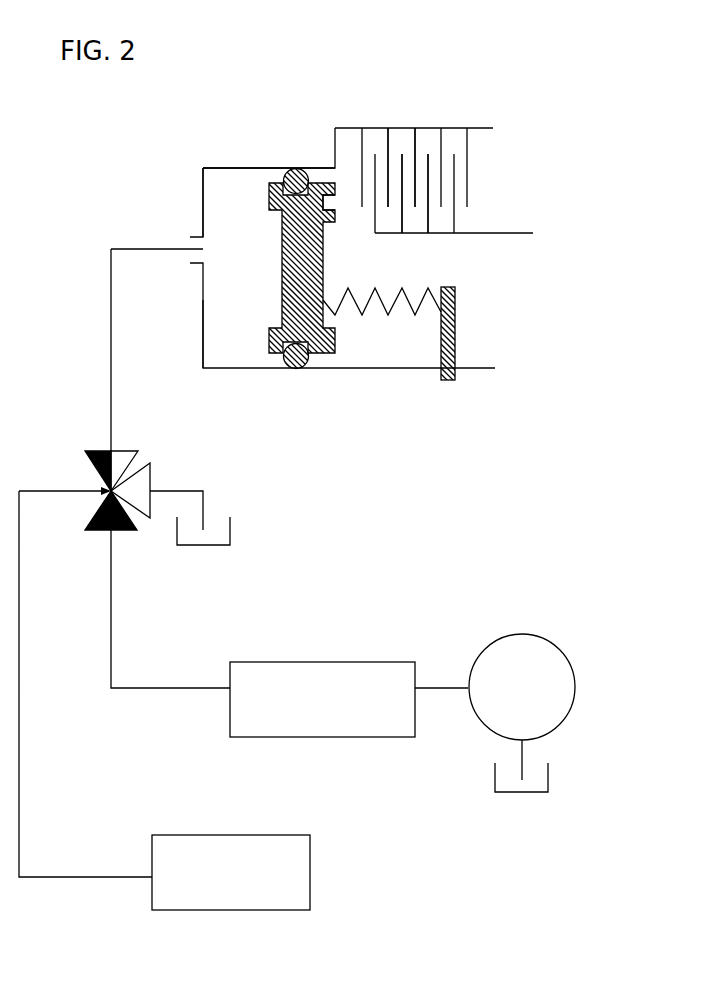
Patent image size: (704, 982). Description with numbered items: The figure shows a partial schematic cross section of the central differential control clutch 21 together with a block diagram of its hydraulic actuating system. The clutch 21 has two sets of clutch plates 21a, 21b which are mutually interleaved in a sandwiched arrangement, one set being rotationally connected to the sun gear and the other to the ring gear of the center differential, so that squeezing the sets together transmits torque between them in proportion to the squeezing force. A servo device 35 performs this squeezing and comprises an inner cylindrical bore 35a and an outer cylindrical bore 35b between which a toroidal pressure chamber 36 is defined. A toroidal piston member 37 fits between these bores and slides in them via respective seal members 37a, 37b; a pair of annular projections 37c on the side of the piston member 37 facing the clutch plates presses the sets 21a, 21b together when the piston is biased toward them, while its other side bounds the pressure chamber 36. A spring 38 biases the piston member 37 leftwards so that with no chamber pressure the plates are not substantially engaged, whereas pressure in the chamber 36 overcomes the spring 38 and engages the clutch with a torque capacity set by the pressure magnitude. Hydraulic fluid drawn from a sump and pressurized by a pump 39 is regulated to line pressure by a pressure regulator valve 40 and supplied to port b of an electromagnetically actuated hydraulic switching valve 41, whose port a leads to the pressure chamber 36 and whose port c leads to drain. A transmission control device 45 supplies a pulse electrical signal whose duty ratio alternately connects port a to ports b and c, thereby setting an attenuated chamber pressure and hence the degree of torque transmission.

The central differential control clutch 21 is at (465, 124).
The set of clutch plates 21a is at (415, 148).
The set of clutch plates 21b is at (402, 217).
The servo device 35 is at (240, 378).
The inner cylindrical bore 35a is at (222, 368).
The outer cylindrical bore 35b is at (242, 172).
The toroidal pressure chamber 36 is at (230, 168).
The toroidal piston member 37 is at (310, 318).
The seal member 37a is at (285, 366).
The seal member 37b is at (296, 168).
The annular projections 37c is at (337, 220).
The spring 38 is at (410, 305).
The pump 39 is at (553, 642).
The pressure regulator valve 40 is at (335, 662).
The electromagnetically actuated hydraulic switching valve 41 is at (125, 532).
The transmission control device 45 is at (313, 877).